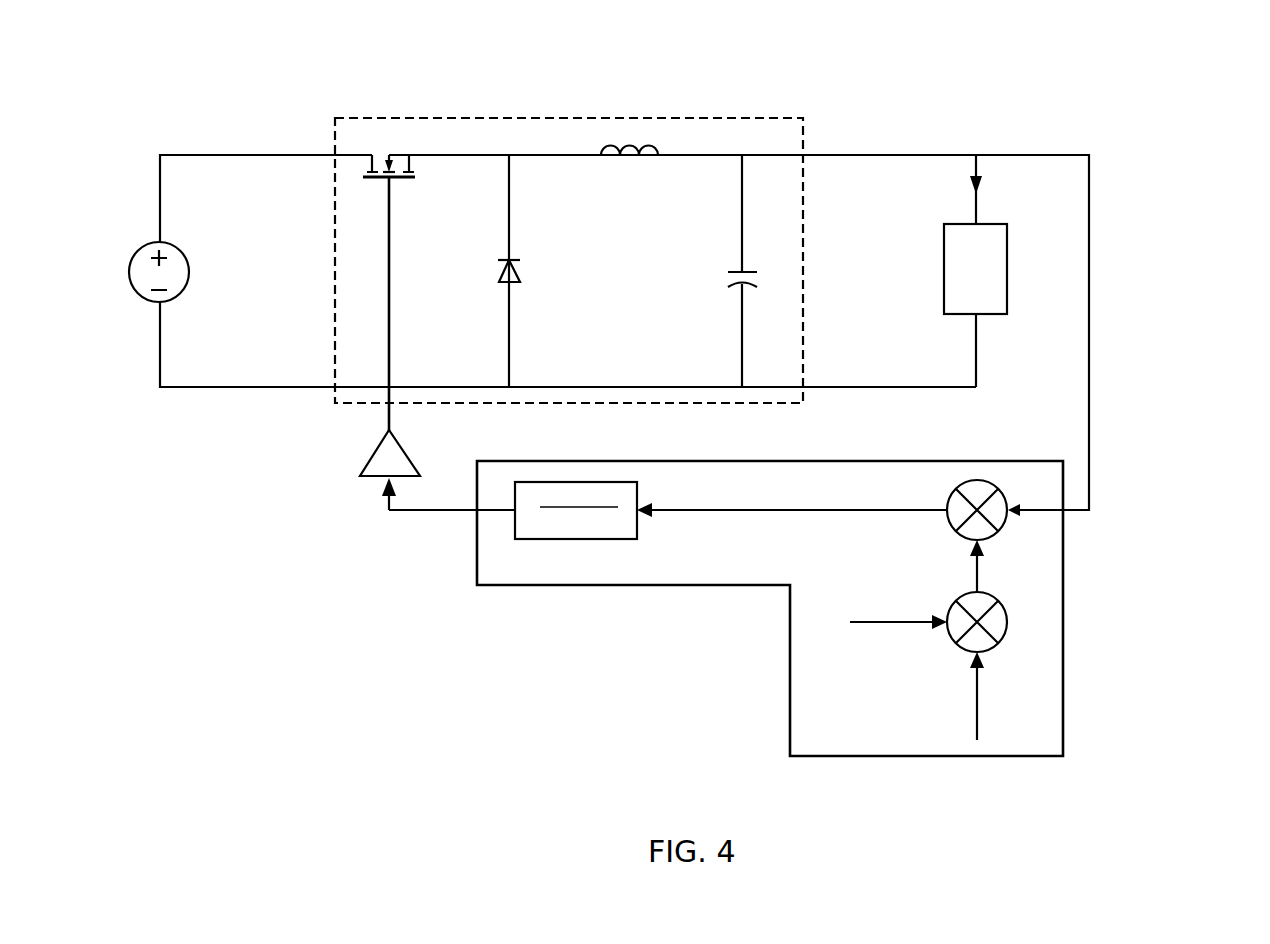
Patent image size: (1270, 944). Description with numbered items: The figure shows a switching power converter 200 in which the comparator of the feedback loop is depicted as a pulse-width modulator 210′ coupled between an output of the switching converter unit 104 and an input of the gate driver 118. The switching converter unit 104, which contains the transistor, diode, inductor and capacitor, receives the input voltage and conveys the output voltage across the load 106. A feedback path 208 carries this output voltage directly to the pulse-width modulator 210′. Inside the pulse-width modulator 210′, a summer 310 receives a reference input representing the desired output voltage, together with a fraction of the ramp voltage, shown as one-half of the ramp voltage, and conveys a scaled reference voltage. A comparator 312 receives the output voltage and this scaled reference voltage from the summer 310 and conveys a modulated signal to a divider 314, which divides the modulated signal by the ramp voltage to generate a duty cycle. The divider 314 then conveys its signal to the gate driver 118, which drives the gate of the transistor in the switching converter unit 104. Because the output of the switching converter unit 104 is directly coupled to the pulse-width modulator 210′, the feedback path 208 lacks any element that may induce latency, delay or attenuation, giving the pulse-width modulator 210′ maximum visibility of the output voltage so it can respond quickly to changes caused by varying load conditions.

The power converter 200 is at (1177, 123).
The switching converter unit 104 is at (763, 118).
The load 106 is at (990, 224).
The gate driver 118 is at (407, 453).
The feedback path 208 is at (1102, 568).
The pulse-width modulator 210′ is at (722, 587).
The summer 310 is at (955, 645).
The comparator 312 is at (963, 540).
The divider 314 is at (567, 540).